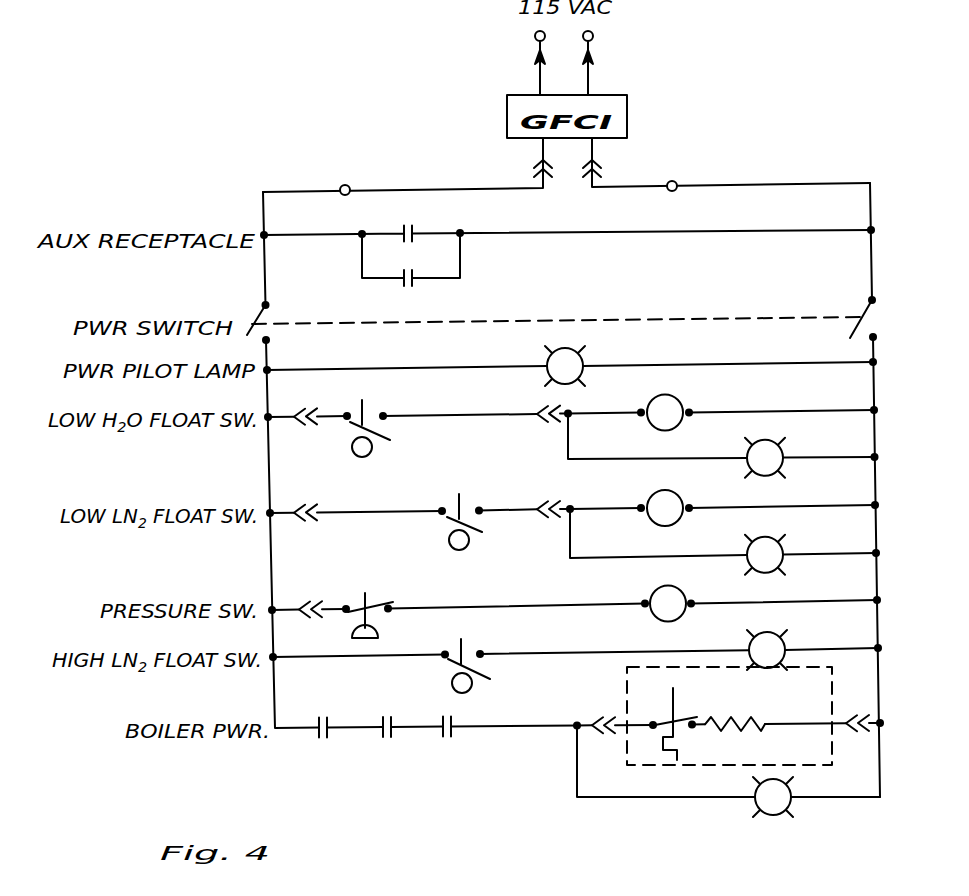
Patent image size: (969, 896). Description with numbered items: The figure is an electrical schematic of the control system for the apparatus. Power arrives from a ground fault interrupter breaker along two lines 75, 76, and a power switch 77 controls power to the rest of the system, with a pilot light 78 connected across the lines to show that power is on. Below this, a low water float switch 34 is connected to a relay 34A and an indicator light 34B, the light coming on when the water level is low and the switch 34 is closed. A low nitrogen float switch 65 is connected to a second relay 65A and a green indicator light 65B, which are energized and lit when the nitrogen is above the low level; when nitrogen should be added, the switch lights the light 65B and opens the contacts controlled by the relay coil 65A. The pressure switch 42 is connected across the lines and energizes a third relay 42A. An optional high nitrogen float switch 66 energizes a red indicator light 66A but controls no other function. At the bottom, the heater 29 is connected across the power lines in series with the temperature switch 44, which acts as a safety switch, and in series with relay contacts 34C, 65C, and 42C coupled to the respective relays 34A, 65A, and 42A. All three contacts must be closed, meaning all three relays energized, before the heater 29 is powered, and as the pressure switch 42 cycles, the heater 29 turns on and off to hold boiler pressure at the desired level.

The power line 75 is at (347, 186).
The power line 76 is at (675, 183).
The power switch 77 is at (257, 316).
The pilot light 78 is at (585, 358).
The low water float switch 34 is at (354, 424).
The relay 34A is at (683, 400).
The indicator light 34B is at (782, 448).
The relay contacts 34C is at (323, 740).
The low nitrogen float switch 65 is at (452, 520).
The second relay 65A is at (648, 493).
The green indicator light 65B is at (785, 543).
The relay contacts 65C is at (387, 740).
The pressure switch 42 is at (358, 604).
The third relay 42A is at (650, 593).
The relay contacts 42C is at (447, 740).
The high nitrogen float switch 66 is at (472, 650).
The red indicator light 66A is at (790, 642).
The temperature switch 44 is at (666, 728).
The heater 29 is at (740, 727).